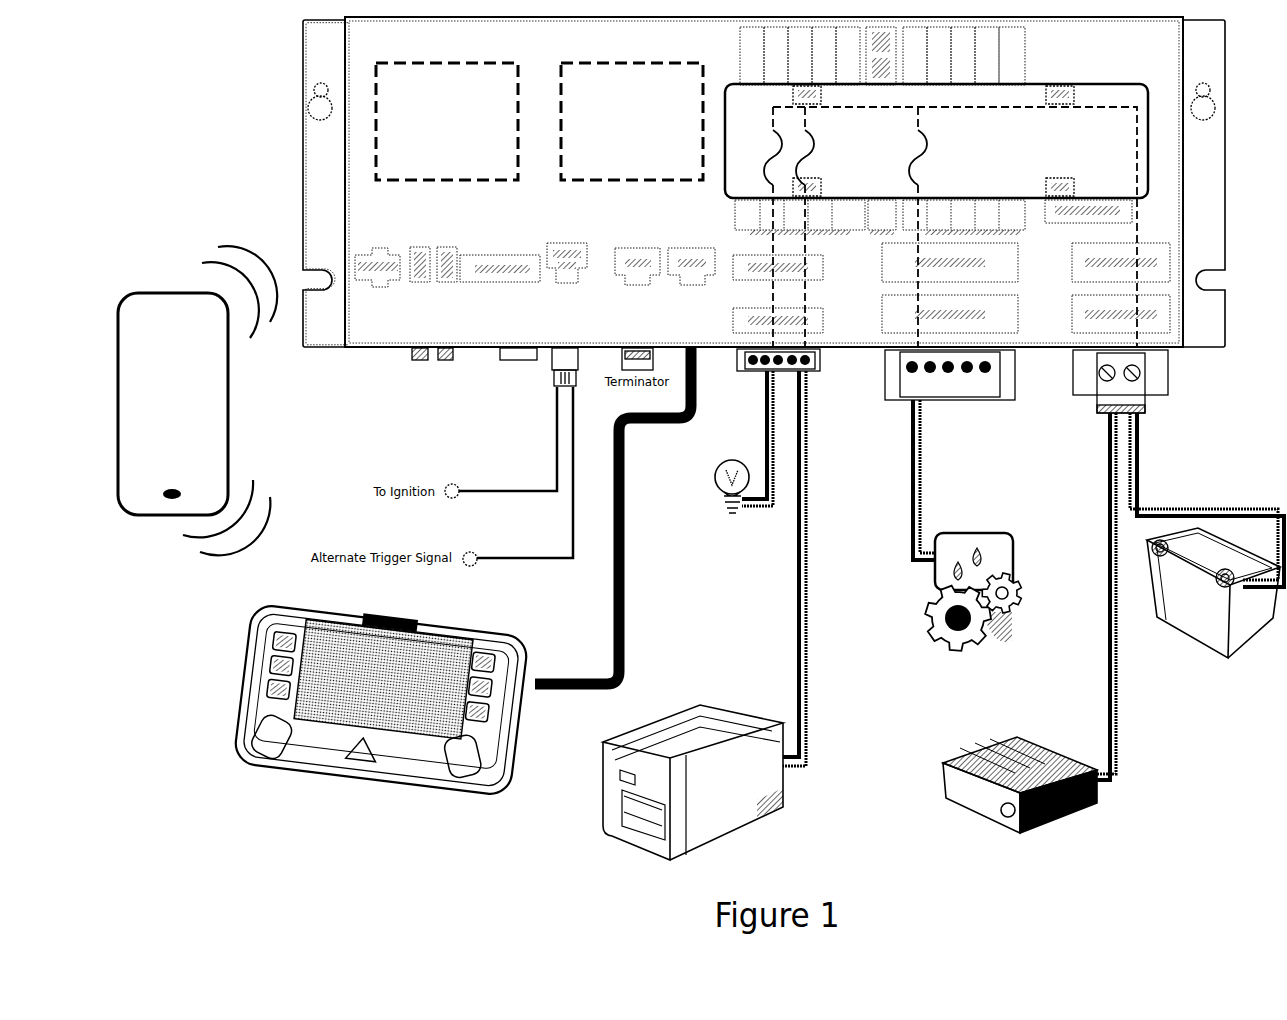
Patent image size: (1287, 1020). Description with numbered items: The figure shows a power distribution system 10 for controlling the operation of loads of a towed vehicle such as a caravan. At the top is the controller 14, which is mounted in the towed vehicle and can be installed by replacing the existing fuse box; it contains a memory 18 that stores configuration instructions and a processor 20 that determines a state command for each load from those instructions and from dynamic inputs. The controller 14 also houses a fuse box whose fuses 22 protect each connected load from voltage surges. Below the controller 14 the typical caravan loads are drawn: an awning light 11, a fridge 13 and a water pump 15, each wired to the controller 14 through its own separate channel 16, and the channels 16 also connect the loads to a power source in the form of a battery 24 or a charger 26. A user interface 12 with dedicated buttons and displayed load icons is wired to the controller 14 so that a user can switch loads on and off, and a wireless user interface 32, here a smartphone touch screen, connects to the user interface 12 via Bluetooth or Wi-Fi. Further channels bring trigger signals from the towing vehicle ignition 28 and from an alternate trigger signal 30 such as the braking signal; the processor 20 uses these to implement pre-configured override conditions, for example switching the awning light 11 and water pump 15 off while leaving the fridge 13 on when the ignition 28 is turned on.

The power distribution system 10 is at (251, 74).
The awning light 11 is at (723, 466).
The user interface 12 is at (272, 602).
The fridge 13 is at (666, 727).
The controller 14 is at (306, 180).
The water pump 15 is at (985, 533).
The channels 16 is at (773, 285).
The memory 18 is at (465, 170).
The processor 20 is at (647, 170).
The fuse 22 is at (792, 143).
The battery 24 is at (1175, 622).
The charger 26 is at (940, 763).
The towing vehicle ignition 28 is at (520, 491).
The alternate trigger signal 30 is at (540, 557).
The wireless user interface 32 is at (156, 420).